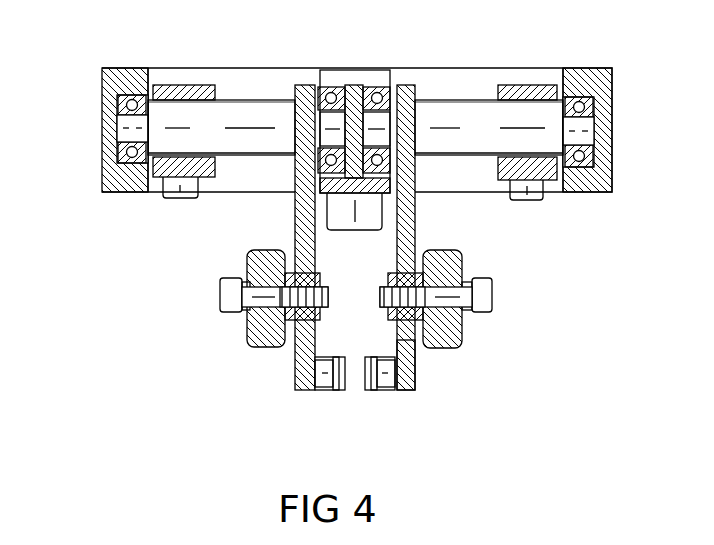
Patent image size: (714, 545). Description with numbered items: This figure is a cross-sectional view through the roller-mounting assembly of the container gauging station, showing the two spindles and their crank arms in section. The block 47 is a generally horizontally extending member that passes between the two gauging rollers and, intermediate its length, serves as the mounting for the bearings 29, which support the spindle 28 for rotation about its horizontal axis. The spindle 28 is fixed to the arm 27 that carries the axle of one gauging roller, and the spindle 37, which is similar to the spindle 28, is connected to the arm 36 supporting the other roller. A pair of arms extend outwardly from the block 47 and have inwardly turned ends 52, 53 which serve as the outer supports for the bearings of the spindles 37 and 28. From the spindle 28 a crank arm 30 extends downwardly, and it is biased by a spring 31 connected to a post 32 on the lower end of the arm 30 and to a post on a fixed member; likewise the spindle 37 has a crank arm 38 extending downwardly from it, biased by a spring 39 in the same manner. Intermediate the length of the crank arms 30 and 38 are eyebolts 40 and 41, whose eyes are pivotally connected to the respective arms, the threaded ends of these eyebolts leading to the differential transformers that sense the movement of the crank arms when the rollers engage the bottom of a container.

The arm 27 is at (527, 85).
The spindle 28 is at (465, 112).
The bearings 29 is at (372, 88).
The crank arm 30 is at (415, 228).
The spring 31 is at (375, 390).
The post 32 is at (415, 368).
The arm 36 is at (173, 92).
The spindle 37 is at (233, 118).
The crank arm 38 is at (297, 213).
The spring 39 is at (333, 390).
The eyebolt 40 is at (452, 335).
The eyebolt 41 is at (256, 335).
The mounting block 47 is at (335, 70).
The inwardly turned end 52 is at (110, 110).
The inwardly turned end 53 is at (603, 147).